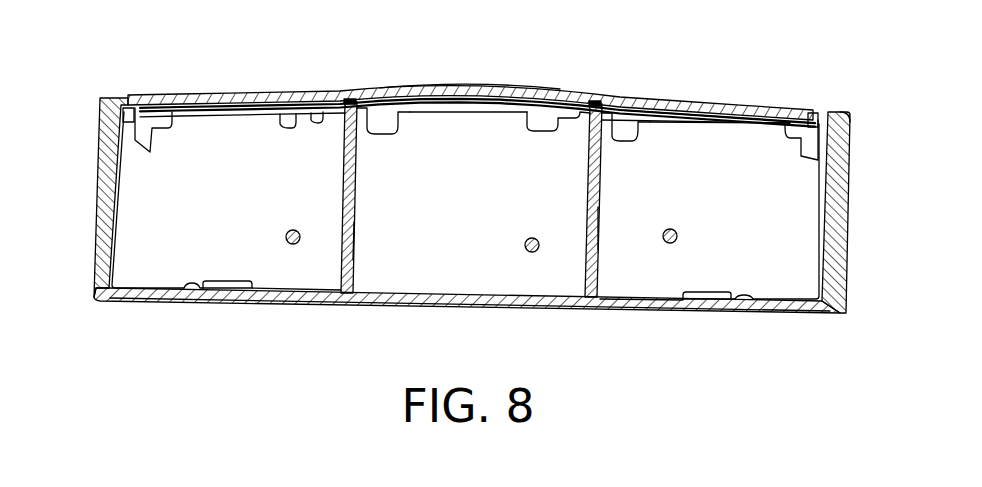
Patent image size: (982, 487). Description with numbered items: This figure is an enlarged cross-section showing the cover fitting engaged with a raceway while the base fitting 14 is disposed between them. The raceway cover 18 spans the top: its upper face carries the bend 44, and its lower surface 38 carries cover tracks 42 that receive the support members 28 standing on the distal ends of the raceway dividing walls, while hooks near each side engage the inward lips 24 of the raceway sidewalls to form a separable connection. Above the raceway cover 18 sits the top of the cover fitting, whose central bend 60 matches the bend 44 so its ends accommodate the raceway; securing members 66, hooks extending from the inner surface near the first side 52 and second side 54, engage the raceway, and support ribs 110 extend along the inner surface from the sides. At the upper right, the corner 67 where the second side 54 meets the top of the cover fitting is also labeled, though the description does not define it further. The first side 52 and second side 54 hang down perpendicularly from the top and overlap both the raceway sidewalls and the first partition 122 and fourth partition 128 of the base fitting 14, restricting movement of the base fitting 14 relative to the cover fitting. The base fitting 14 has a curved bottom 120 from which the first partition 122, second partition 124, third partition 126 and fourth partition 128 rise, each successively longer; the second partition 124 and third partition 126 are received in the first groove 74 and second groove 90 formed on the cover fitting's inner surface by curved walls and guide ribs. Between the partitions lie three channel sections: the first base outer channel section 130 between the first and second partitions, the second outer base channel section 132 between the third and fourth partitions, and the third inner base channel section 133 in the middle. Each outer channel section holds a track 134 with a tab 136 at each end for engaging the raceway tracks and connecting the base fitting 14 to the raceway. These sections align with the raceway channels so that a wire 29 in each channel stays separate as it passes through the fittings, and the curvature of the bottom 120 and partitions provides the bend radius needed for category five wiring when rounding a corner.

The base fitting 14 is at (485, 305).
The raceway cover 18 is at (200, 96).
The inward lip 24 is at (132, 99).
The support member 28 is at (400, 125).
The wire 29 is at (292, 244).
The lower surface 38 is at (670, 124).
The cover track 42 is at (285, 113).
The bend 44 is at (468, 108).
The first side 52 is at (96, 198).
The second side 54 is at (836, 313).
The central bend 60 is at (475, 86).
The securing member 66 is at (165, 107).
The corner 67 is at (835, 110).
The first groove 74 is at (348, 99).
The second groove 90 is at (598, 101).
The support rib 110 is at (697, 116).
The bottom 120 is at (302, 308).
The first partition 122 is at (122, 212).
The second partition 124 is at (355, 222).
The third partition 126 is at (600, 207).
The fourth partition 128 is at (818, 236).
The first base outer channel section 130 is at (146, 262).
The second outer base channel section 132 is at (624, 264).
The third inner base channel section 133 is at (414, 256).
The track 134 is at (192, 290).
The tab 136 is at (232, 281).